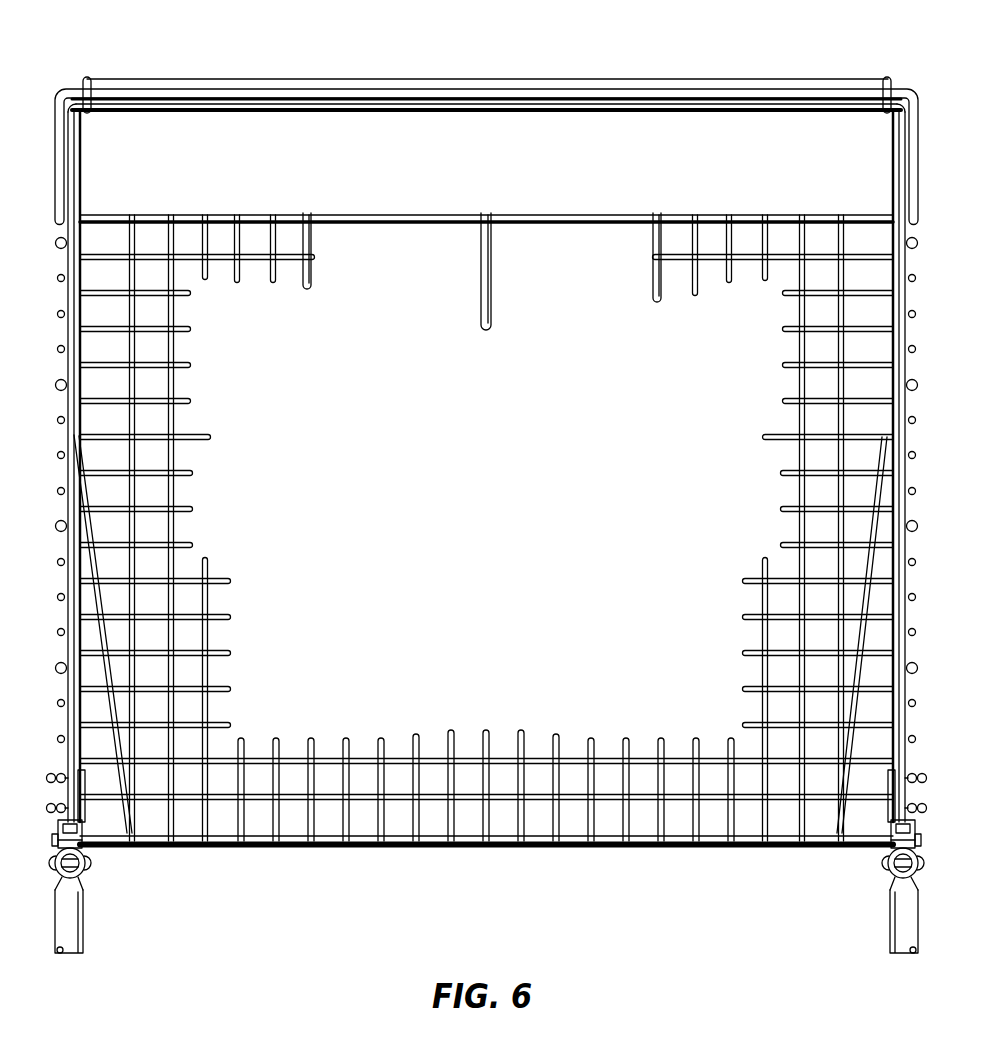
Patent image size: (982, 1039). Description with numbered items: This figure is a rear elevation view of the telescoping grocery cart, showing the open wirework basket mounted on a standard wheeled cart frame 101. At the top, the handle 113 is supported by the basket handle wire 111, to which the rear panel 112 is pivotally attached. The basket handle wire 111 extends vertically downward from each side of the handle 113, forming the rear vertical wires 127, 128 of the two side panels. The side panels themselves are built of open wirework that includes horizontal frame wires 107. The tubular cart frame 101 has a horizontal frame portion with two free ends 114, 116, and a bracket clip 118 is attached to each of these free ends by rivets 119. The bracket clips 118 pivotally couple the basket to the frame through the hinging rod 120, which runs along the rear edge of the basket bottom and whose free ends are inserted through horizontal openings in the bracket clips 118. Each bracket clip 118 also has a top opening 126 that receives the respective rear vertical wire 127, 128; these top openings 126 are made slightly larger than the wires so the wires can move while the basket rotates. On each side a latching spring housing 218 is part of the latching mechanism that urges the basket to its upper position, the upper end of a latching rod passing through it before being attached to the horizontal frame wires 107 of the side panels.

The wheeled cart frame 101 is at (85, 940).
The horizontal frame wires 107 is at (57, 630).
The basket handle wire 111 is at (80, 188).
The rear panel 112 is at (255, 216).
The handle 113 is at (345, 83).
The free end 114 is at (84, 886).
The free end 116 is at (889, 886).
The bracket clip 118 is at (88, 838).
The rivets 119 is at (92, 870).
The hinging rod 120 is at (418, 838).
The top opening 126 is at (73, 820).
The rear vertical wire 127 is at (67, 437).
The rear vertical wire 128 is at (906, 468).
The latching spring housing 218 is at (83, 772).